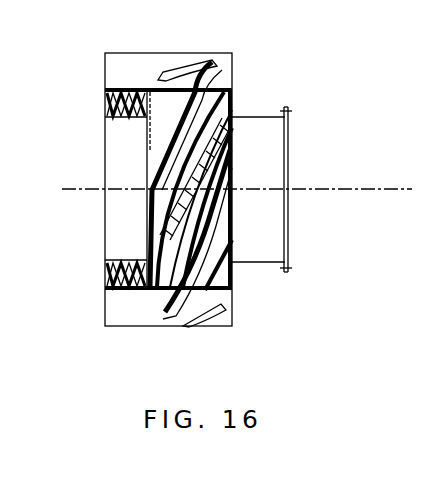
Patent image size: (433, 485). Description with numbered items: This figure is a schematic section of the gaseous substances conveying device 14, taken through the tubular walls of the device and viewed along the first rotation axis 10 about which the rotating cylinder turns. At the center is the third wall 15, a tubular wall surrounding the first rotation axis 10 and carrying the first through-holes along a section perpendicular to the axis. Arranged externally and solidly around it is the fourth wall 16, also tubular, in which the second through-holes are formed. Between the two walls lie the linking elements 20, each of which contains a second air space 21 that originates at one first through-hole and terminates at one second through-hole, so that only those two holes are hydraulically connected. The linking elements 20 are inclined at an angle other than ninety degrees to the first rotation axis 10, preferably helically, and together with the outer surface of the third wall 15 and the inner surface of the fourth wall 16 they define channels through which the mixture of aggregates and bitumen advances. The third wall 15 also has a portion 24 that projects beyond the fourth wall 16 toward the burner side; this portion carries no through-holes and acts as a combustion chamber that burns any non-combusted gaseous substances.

The first rotation axis 10 is at (341, 188).
The gaseous substances conveying device 14 is at (319, 92).
The third wall 15 is at (267, 263).
The fourth wall 16 is at (140, 312).
The linking element 20 is at (125, 91).
The second air space 21 is at (150, 137).
The portion 24 is at (266, 97).